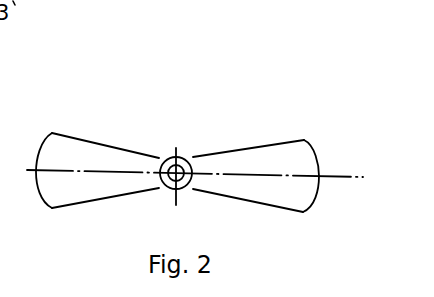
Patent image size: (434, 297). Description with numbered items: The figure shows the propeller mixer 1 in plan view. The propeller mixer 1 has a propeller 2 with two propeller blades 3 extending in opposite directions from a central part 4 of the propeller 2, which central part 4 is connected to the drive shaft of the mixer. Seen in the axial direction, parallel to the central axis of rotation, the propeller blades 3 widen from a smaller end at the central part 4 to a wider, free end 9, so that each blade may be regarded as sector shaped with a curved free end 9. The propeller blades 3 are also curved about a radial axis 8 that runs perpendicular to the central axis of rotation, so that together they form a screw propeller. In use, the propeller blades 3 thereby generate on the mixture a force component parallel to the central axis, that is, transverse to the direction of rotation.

The propeller mixer 1 is at (221, 106).
The propeller 2 is at (340, 118).
The propeller blades 3 is at (88, 148).
The central part 4 is at (181, 156).
The radial axis 8 is at (348, 175).
The free end 9 is at (38, 145).